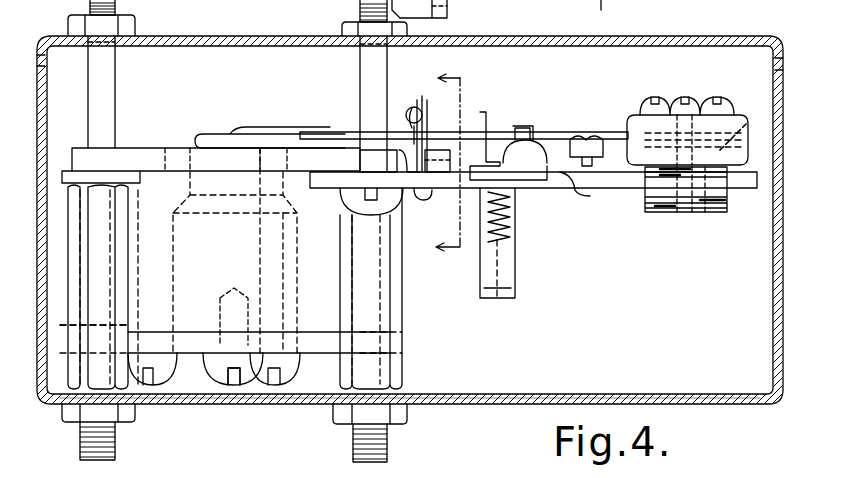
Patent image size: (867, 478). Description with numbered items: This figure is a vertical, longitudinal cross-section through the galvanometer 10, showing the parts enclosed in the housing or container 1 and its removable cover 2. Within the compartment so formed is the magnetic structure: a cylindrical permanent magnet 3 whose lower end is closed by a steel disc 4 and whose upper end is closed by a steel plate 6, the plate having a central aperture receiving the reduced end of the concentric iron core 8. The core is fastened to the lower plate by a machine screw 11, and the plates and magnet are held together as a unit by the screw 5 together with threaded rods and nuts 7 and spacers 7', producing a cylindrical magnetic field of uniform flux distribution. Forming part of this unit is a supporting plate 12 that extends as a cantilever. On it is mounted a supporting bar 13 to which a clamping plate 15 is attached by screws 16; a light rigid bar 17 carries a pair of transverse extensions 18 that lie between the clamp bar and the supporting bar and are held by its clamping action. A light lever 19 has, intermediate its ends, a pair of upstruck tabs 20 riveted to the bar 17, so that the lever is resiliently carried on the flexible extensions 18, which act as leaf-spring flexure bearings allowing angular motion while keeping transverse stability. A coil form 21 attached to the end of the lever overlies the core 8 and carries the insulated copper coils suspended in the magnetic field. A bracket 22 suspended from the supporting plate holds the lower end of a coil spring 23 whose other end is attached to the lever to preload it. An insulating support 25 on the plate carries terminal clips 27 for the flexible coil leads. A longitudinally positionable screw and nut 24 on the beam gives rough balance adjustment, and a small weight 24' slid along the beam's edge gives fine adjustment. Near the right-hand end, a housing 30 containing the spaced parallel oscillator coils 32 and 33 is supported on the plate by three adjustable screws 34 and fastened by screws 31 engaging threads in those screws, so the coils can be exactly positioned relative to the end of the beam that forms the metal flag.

The housing 1 is at (205, 396).
The removable cover 2 is at (231, 37).
The cylindrical permanent magnet 3 is at (324, 312).
The steel disc 4 is at (316, 353).
The screw 5 is at (174, 374).
The steel plate 6 is at (127, 150).
The threaded rods and nuts 7 is at (241, 231).
The spacers 7' is at (225, 287).
The concentric iron core 8 is at (298, 250).
The galvanometer 10 is at (452, 338).
The machine screw 11 is at (236, 386).
The supporting plate 12 is at (420, 190).
The supporting bar 13 is at (442, 150).
The clamping plate 15 is at (414, 140).
The screws 16 is at (405, 160).
The light rigid bar 17 is at (412, 110).
The transverse extensions 18 is at (430, 113).
The light lever 19 is at (343, 132).
The upstruck tabs 20 is at (425, 98).
The coil form 21 is at (195, 141).
The bracket 22 is at (516, 258).
The coil spring 23 is at (514, 234).
The screw and nut 24 is at (586, 136).
The small weight 24' is at (543, 107).
The insulating support 25 is at (578, 190).
The terminal clips 27 is at (487, 118).
The housing 30 is at (632, 120).
The screws 31 is at (716, 100).
The oscillator coil 32 is at (738, 113).
The oscillator coil 33 is at (728, 171).
The adjustable screws 34 is at (705, 212).